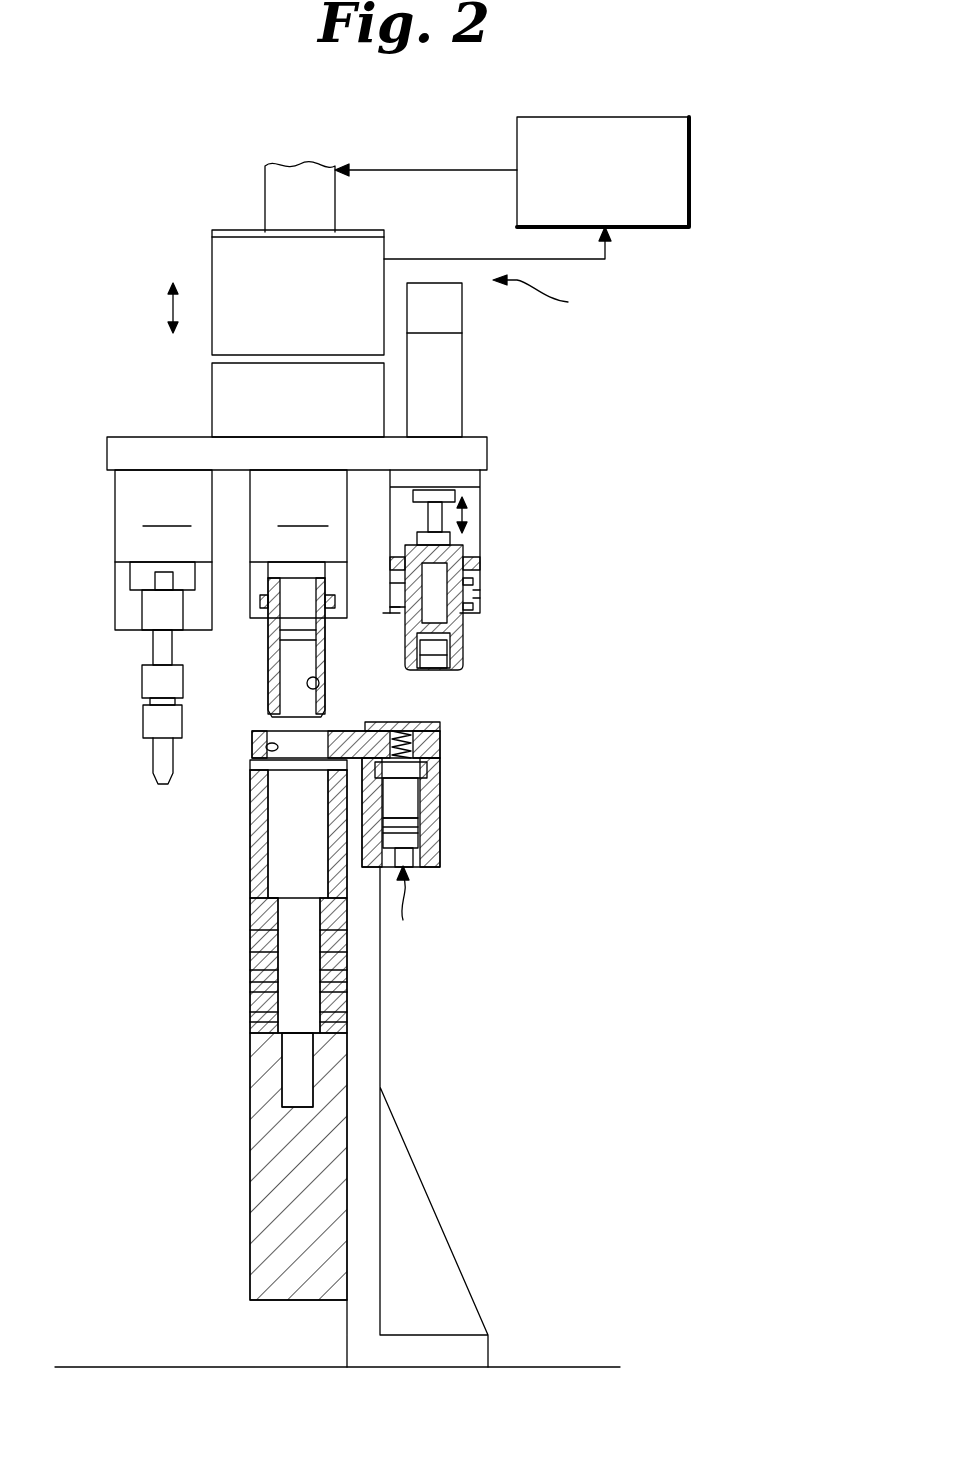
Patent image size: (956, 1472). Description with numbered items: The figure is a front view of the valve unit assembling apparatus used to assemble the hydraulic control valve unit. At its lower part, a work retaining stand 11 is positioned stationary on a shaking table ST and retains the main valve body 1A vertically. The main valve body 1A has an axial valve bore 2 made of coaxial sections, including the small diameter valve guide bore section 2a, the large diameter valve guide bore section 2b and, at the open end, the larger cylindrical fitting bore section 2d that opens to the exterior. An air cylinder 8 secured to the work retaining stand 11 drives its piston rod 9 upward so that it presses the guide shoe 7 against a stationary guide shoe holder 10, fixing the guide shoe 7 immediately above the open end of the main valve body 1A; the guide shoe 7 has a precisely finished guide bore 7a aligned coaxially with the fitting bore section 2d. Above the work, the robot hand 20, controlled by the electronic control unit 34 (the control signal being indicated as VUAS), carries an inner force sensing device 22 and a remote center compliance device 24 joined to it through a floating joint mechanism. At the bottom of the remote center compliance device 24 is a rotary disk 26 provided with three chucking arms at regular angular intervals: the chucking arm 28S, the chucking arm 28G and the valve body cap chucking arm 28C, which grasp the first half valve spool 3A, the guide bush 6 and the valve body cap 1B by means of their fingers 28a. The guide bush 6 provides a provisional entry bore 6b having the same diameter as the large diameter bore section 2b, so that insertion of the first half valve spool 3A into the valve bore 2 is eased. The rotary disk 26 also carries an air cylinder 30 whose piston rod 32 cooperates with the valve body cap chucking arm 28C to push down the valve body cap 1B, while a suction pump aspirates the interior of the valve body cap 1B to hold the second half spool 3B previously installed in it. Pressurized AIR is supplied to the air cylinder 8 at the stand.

The robot hand 20 is at (222, 202).
The inner force sensing device 22 is at (212, 251).
The remote center compliance device 24 is at (198, 383).
The rotary disk 26 is at (490, 455).
The chucking arm 28S is at (163, 550).
The chucking arm 28G is at (298, 544).
The valve body cap chucking arm 28C is at (480, 500).
The fingers 28a is at (115, 600).
The air cylinder 30 is at (452, 373).
The piston rod 32 is at (428, 514).
The electronic control unit 34 is at (689, 147).
The main valve body 1A is at (250, 1100).
The valve body cap 1B is at (465, 618).
The axial valve bore 2 is at (285, 828).
The small diameter cylindrical valve guide bore section 2a is at (290, 1072).
The large diameter cylindrical valve guide bore section 2b is at (283, 1005).
The cylindrical fitting bore section 2d is at (278, 885).
The first half valve spool 3A is at (143, 722).
The second half spool 3B is at (432, 662).
The guide bush 6 is at (268, 657).
The provisional entry bore 6b is at (319, 683).
The guide shoe 7 is at (252, 738).
The guide bore 7a is at (266, 748).
The air cylinder 8 is at (455, 808).
The piston rod 9 is at (418, 797).
The stationary guide shoe holder 10 is at (440, 725).
The work retaining stand 11 is at (365, 1003).
The shaking table ST is at (583, 1367).
The vacuum unit actuation signal VUAS is at (562, 295).
The air supply AIR is at (407, 906).